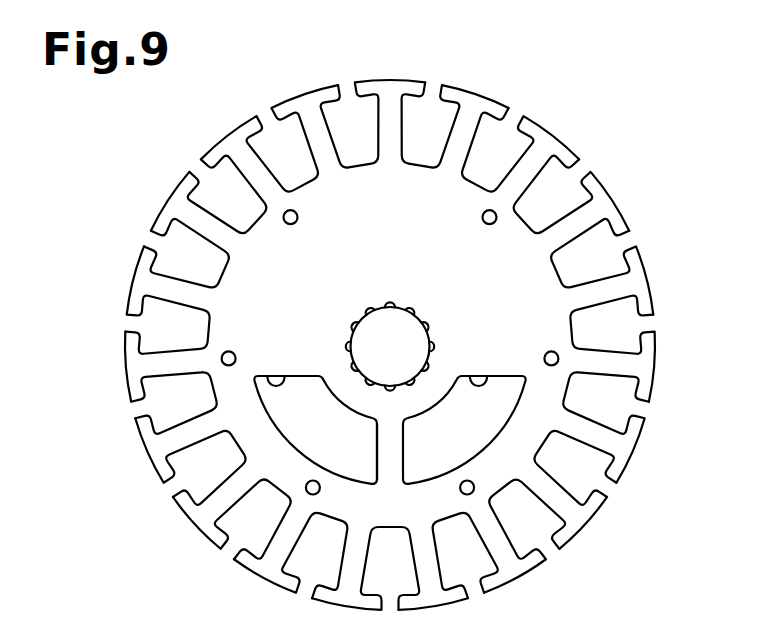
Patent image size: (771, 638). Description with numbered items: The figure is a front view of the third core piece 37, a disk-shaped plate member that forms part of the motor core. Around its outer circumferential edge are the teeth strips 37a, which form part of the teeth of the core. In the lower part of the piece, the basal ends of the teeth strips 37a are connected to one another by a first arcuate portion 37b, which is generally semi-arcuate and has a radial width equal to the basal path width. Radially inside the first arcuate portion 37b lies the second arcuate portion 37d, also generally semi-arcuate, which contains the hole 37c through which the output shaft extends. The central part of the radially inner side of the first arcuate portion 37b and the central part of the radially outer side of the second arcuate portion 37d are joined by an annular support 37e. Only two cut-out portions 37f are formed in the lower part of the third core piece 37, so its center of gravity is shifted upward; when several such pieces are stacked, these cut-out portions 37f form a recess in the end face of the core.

The third core piece 37 is at (651, 164).
The teeth strip 37a is at (463, 154).
The first arcuate portion 37b is at (438, 490).
The hole 37c is at (414, 316).
The second arcuate portion 37d is at (333, 384).
The annular support 37e is at (385, 443).
The cut-out portion 37f is at (280, 376).